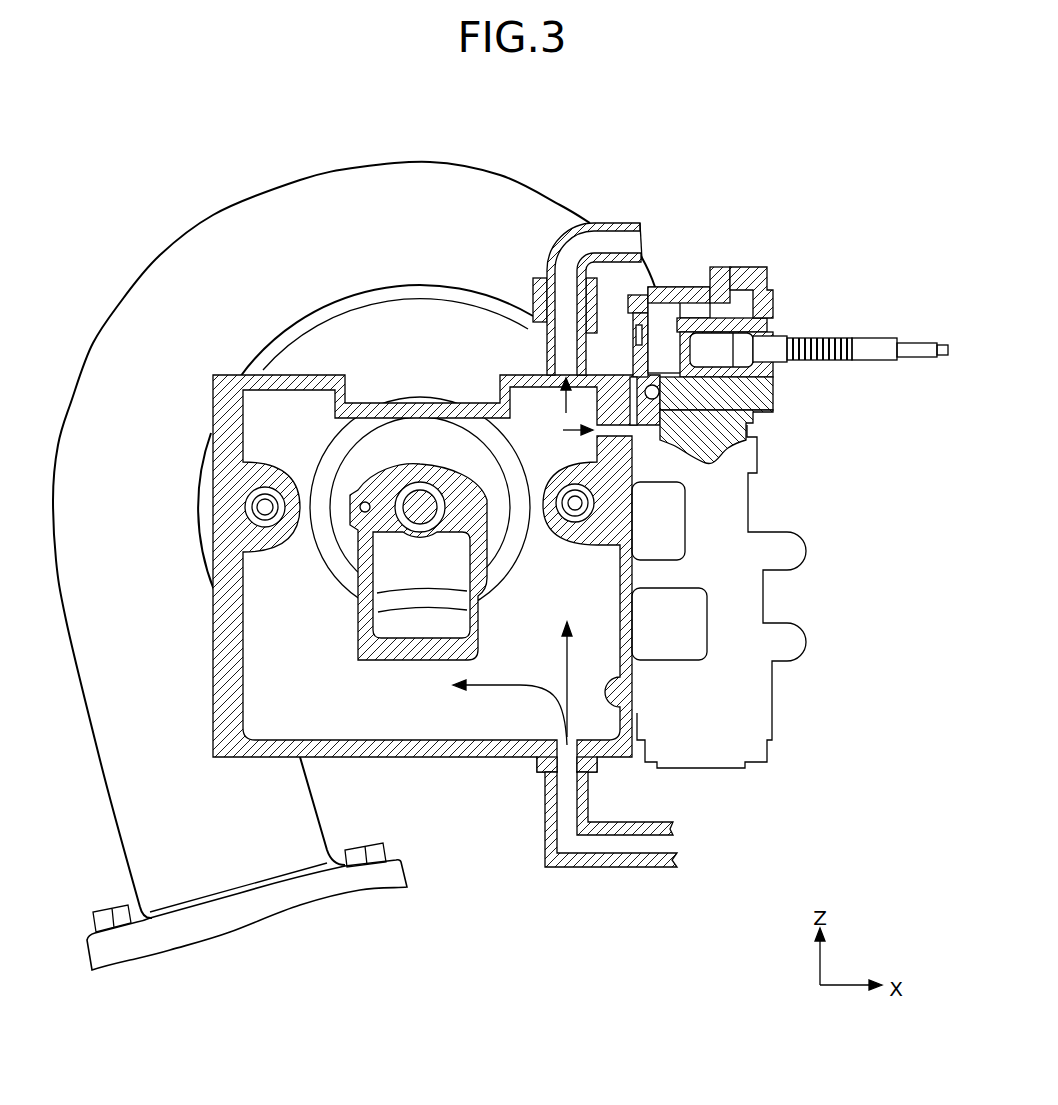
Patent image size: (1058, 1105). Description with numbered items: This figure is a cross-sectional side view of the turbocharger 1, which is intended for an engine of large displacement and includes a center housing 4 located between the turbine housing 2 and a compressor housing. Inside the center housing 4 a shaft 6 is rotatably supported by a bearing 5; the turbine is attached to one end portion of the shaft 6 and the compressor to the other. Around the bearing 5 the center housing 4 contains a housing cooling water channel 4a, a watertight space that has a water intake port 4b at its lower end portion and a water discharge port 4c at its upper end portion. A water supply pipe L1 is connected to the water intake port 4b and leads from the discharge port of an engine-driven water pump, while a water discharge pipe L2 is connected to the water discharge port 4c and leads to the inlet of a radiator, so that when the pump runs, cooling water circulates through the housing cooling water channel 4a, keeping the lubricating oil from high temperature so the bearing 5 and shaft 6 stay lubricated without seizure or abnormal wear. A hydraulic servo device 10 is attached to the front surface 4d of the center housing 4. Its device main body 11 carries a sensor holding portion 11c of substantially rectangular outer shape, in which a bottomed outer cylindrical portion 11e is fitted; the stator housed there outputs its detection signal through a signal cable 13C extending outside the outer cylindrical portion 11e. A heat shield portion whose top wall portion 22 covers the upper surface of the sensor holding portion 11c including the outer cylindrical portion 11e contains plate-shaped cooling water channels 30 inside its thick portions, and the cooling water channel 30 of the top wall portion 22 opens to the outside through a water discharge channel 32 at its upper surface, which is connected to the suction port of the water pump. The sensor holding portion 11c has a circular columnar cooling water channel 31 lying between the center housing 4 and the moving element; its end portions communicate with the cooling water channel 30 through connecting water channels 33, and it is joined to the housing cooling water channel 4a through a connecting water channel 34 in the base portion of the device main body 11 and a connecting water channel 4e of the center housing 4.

The turbocharger 1 is at (159, 173).
The turbine housing 2 is at (330, 197).
The center housing 4 is at (213, 600).
The housing cooling water channel 4a is at (225, 633).
The water intake port 4b is at (563, 760).
The water discharge port 4c is at (562, 364).
The front surface 4d is at (633, 573).
The connecting water channel 4e is at (615, 470).
The bearing 5 is at (410, 487).
The shaft 6 is at (420, 503).
The hydraulic servo device 10 is at (853, 427).
The device main body 11 is at (733, 423).
The sensor holding portion 11c is at (763, 392).
The outer cylindrical portion 11e is at (723, 350).
The signal cable 13C is at (917, 350).
The top wall portion 22 is at (703, 293).
The cooling water channel 30 is at (657, 340).
The cooling water channel 31 is at (680, 398).
The water discharge channel 32 is at (738, 267).
The connecting water channel 33 is at (630, 370).
The connecting water channel 34 is at (643, 430).
The water supply pipe L1 is at (608, 845).
The water discharge pipe L2 is at (618, 240).